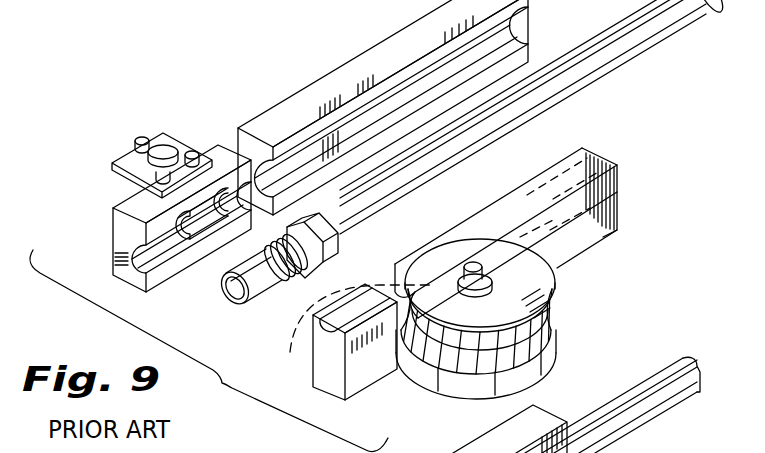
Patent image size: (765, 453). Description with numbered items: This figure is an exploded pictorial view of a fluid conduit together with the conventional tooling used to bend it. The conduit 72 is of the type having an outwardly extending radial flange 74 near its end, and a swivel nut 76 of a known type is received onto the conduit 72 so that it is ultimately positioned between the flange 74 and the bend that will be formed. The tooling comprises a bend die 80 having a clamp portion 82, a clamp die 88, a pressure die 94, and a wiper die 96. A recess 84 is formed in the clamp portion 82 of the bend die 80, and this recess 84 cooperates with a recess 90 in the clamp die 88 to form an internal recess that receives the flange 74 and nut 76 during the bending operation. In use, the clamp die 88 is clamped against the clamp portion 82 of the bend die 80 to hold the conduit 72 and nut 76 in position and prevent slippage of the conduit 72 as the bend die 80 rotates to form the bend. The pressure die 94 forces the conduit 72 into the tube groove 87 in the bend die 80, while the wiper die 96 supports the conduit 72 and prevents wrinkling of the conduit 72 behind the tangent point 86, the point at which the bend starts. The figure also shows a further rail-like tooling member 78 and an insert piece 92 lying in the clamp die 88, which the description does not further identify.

The conduit 72 is at (658, 55).
The radial flange 74 is at (278, 288).
The swivel nut 76 is at (330, 254).
The rail 78 is at (650, 412).
The bend die 80 is at (574, 305).
The clamp portion 82 is at (333, 393).
The recess 84 is at (349, 333).
The tangent point 86 is at (432, 238).
The tube groove 87 is at (545, 340).
The clamp die 88 is at (104, 249).
The recess 90 is at (222, 240).
The insert upper half 92 is at (232, 242).
The pressure die 94 is at (350, 48).
The wiper die 96 is at (620, 203).